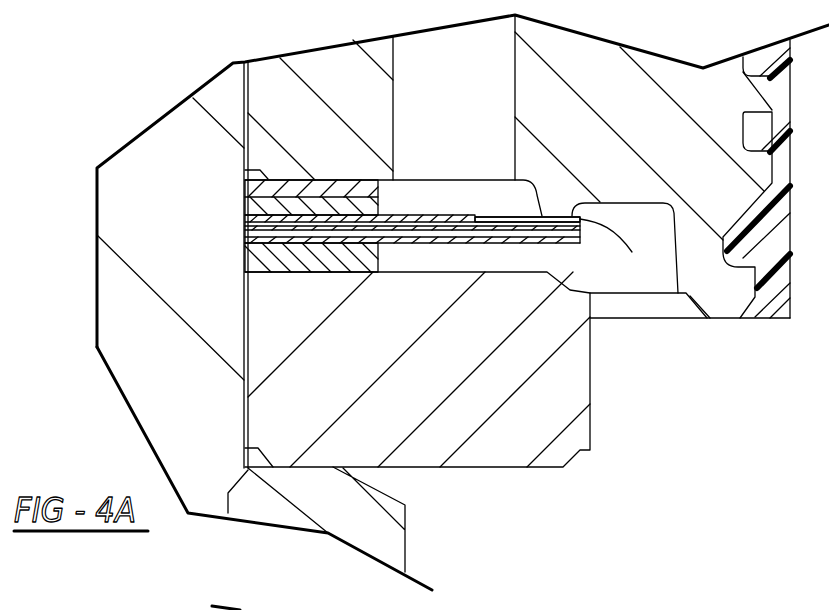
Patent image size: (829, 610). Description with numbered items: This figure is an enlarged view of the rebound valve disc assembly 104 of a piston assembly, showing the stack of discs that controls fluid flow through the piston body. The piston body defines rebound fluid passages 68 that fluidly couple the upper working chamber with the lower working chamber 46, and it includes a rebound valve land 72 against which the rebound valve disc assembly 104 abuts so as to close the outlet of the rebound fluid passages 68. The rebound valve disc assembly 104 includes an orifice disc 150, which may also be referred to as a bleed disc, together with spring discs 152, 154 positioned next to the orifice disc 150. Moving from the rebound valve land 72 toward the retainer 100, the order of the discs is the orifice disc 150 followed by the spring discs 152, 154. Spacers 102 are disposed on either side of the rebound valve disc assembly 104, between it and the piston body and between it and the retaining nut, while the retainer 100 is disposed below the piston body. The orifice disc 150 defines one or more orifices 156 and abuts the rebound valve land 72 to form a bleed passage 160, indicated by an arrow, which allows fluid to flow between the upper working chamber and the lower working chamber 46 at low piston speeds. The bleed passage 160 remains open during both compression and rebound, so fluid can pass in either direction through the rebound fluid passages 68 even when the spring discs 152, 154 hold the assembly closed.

The lower working chamber 46 is at (675, 518).
The rebound fluid passages 68 is at (475, 86).
The rebound valve land 72 is at (484, 166).
The retainer 100 is at (590, 362).
The spacers 102 is at (330, 190).
The rebound valve disc assembly 104 is at (450, 250).
The orifice disc 150 is at (250, 220).
The spring disc 152 is at (252, 229).
The spring disc 154 is at (252, 240).
The orifices 156 is at (498, 221).
The bleed passage 160 is at (632, 266).